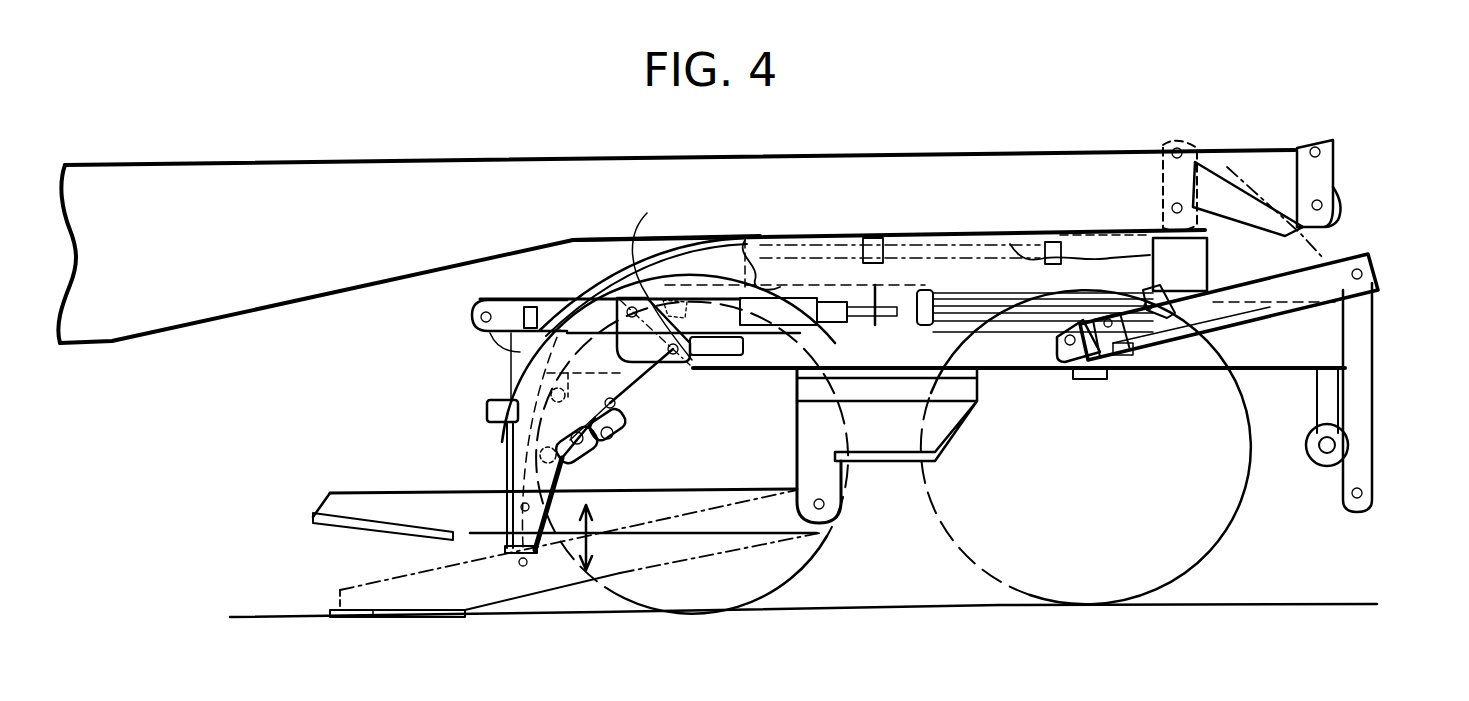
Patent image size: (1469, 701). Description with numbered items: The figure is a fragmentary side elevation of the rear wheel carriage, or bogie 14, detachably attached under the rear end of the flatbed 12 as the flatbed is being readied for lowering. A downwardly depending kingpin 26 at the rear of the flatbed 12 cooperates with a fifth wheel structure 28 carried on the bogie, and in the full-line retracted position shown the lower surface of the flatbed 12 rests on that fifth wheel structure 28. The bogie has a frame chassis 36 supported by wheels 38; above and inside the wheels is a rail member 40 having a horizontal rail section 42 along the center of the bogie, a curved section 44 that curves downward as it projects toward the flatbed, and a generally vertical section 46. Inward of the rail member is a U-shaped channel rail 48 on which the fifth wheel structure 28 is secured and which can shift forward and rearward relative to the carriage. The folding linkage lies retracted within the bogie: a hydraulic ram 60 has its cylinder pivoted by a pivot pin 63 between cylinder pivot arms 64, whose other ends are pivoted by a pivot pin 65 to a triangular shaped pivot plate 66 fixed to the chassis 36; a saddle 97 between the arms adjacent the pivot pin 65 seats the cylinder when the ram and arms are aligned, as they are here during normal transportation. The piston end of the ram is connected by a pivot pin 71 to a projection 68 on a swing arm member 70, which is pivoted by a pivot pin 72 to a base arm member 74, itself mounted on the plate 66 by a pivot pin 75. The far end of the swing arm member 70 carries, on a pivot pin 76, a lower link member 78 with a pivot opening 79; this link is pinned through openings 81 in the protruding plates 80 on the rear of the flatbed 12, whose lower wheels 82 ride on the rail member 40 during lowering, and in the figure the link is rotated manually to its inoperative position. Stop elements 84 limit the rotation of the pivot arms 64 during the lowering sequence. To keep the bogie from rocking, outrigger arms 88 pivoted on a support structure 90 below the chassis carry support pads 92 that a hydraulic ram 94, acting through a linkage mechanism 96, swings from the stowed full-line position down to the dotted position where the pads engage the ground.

The flatbed 12 is at (927, 154).
The rear wheel carriage 14 is at (1365, 100).
The kingpin 26 is at (893, 240).
The fifth wheel structure 28 is at (840, 237).
The frame chassis 36 is at (865, 370).
The wheels 38 is at (937, 527).
The rail member 40 is at (1150, 230).
The horizontal rail section 42 is at (1025, 240).
The curved section 44 is at (598, 283).
The vertical section 46 is at (500, 542).
The rail 48 is at (1150, 233).
The hydraulic ram 60 is at (660, 320).
The pivot pin 63 is at (484, 310).
The cylinder pivot arms 64 is at (495, 335).
The pivot pin 65 is at (662, 279).
The triangular shaped pivot plate 66 is at (660, 372).
The projection 68 is at (1125, 355).
The swing arm member 70 is at (1132, 345).
The pivot pin 71 is at (1152, 303).
The pivot pin 72 is at (1088, 380).
The base arm member 74 is at (1003, 352).
The pivot pin 75 is at (700, 365).
The pivot pin 76 is at (1378, 278).
The lower link member 78 is at (1232, 162).
The pivot opening 79 is at (1372, 492).
The protruding plates 80 is at (1323, 173).
The openings 81 is at (1335, 146).
The wheels 82 is at (1342, 200).
The stop elements 84 is at (490, 425).
The outrigger arms 88 is at (360, 585).
The support structure 90 is at (800, 450).
The support pads 92 is at (358, 520).
The hydraulic ram 94 is at (672, 420).
The linkage mechanisms 96 is at (595, 484).
The saddle 97 is at (530, 306).